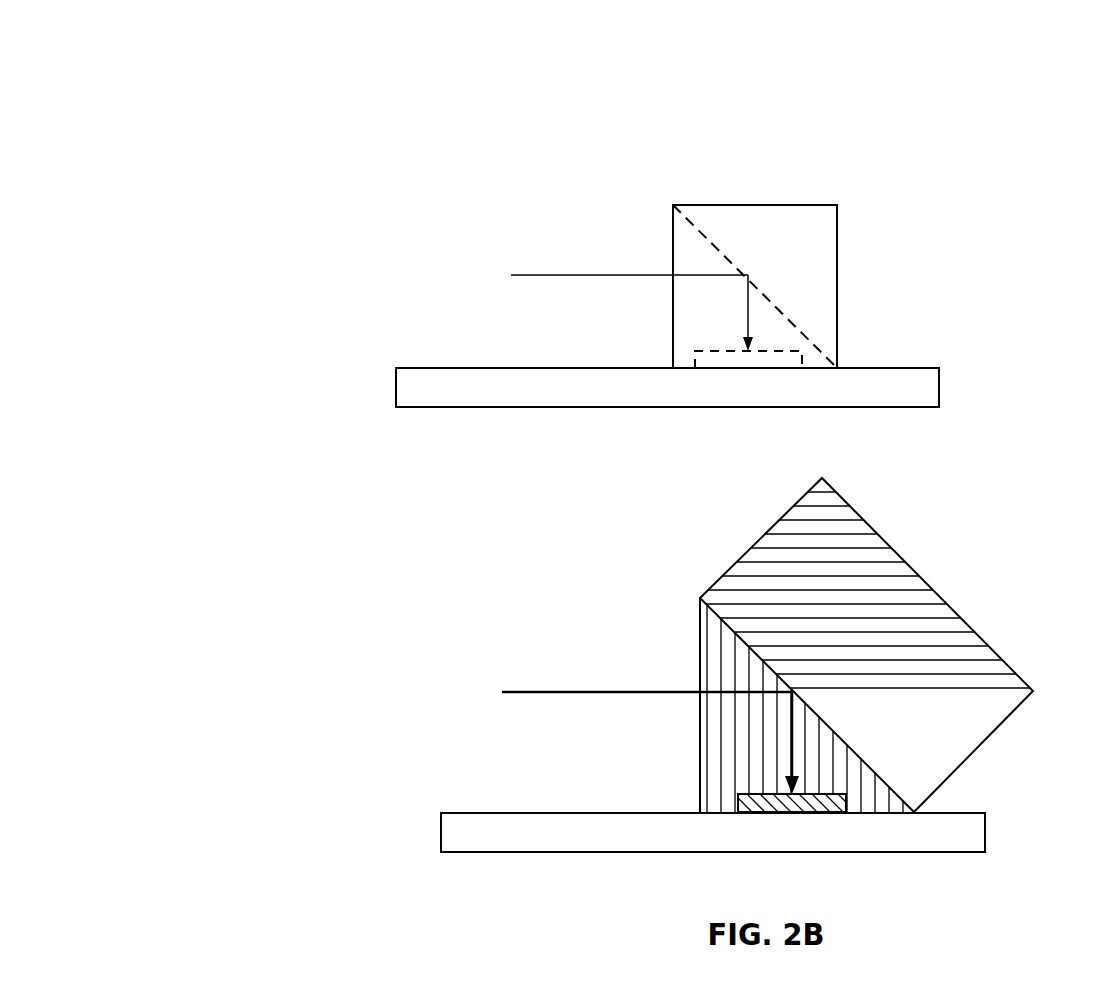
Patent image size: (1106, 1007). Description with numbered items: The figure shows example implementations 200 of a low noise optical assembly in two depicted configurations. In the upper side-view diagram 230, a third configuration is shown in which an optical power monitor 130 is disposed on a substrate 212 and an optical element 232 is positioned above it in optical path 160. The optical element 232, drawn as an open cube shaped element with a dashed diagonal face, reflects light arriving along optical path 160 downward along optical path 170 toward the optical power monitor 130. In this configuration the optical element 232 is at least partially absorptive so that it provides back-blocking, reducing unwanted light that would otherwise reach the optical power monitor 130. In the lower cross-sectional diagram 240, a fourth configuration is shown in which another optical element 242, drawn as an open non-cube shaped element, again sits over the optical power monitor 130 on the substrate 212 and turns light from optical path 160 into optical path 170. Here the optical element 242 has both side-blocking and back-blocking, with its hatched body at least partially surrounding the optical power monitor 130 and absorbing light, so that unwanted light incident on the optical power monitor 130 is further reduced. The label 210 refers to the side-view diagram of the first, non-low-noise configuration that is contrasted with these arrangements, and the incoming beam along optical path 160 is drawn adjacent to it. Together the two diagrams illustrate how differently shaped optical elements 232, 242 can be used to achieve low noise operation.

The example implementations 200 is at (276, 50).
The side-view diagram 230 is at (443, 208).
The cross-sectional diagram 240 is at (418, 527).
The substrate 212 is at (939, 387).
The optical element 232 is at (780, 205).
The optical element 242 is at (1008, 667).
The optical path 160 is at (647, 468).
The optical path 170 is at (750, 534).
The optical power monitor 130 is at (698, 348).
The side-view diagram 210 is at (597, 692).